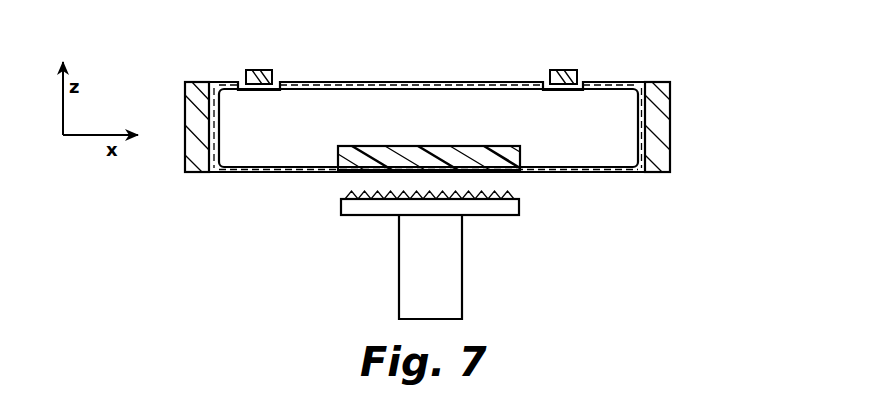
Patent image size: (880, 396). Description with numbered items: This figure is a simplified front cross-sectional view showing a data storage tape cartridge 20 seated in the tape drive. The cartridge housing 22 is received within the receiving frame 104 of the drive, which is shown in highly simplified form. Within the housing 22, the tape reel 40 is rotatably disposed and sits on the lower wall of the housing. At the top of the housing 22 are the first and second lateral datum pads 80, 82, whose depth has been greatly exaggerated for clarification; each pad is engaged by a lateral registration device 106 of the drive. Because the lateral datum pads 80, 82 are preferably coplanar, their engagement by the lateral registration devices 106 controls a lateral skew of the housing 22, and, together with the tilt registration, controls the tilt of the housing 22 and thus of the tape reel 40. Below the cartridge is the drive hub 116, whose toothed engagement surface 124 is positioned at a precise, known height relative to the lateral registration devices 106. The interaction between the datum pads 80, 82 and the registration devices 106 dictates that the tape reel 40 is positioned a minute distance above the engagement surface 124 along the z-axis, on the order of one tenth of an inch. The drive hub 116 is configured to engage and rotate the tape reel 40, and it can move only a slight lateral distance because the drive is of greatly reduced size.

The data storage tape cartridge 20 is at (571, 211).
The housing 22 is at (606, 174).
The tape reel 40 is at (468, 145).
The first lateral datum pad 80 is at (556, 90).
The second lateral datum pad 82 is at (276, 90).
The receiving frame 104 is at (668, 100).
The first lateral registration device 106 is at (261, 72).
The drive hub 116 is at (398, 292).
The engagement surface 124 is at (345, 191).